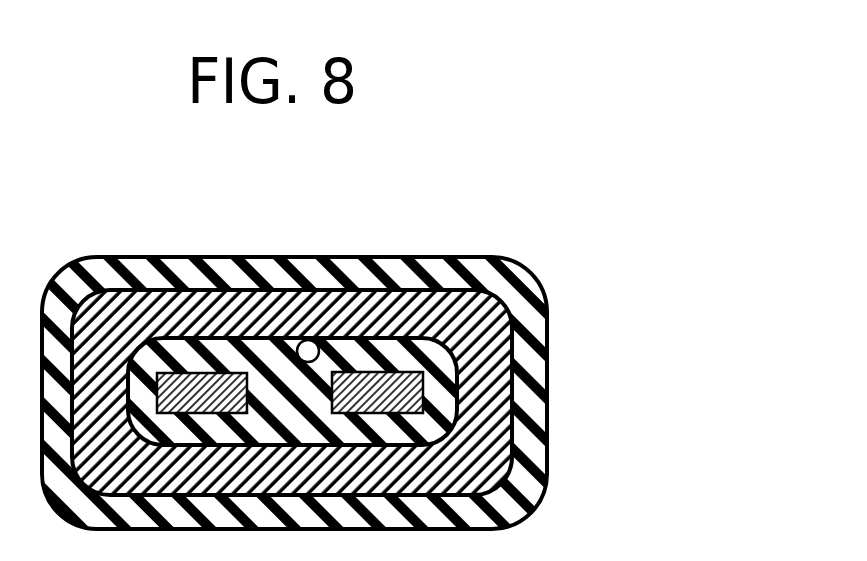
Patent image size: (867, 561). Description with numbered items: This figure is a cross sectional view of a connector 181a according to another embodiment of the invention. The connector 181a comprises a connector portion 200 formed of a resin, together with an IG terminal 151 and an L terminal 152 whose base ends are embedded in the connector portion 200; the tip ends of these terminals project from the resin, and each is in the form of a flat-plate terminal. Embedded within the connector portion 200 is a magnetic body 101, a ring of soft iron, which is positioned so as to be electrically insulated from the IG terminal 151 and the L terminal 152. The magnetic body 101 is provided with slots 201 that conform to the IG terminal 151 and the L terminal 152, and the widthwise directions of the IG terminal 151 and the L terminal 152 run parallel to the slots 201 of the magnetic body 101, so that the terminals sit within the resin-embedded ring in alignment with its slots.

The connector 181a is at (549, 308).
The connector portion 200 is at (530, 450).
The magnetic body 101 is at (498, 377).
The IG terminal 151 is at (210, 373).
The L terminal 152 is at (390, 368).
The slots 201 is at (318, 340).